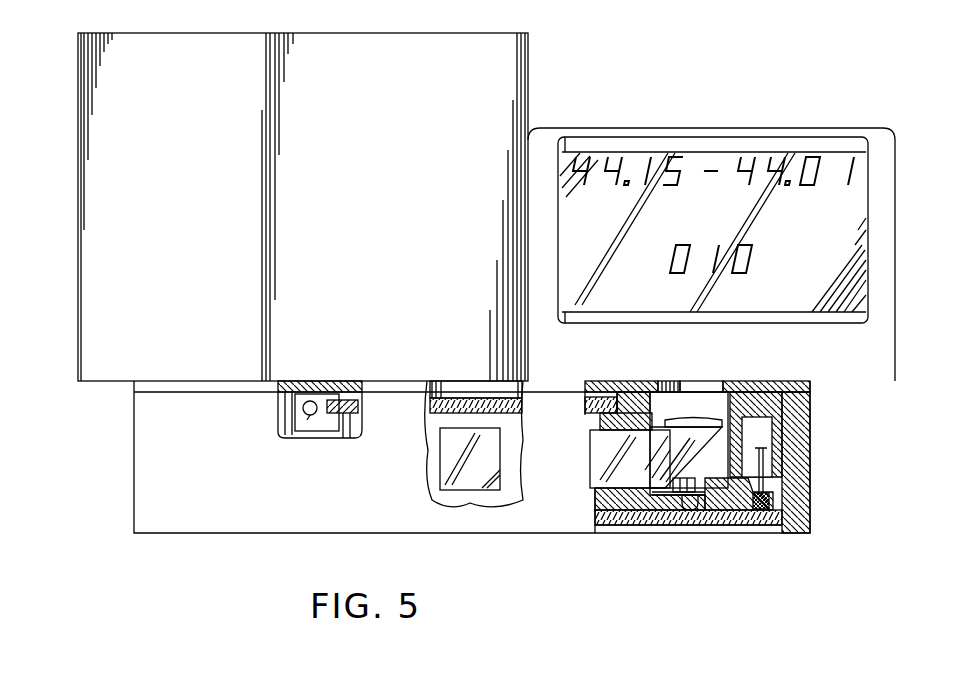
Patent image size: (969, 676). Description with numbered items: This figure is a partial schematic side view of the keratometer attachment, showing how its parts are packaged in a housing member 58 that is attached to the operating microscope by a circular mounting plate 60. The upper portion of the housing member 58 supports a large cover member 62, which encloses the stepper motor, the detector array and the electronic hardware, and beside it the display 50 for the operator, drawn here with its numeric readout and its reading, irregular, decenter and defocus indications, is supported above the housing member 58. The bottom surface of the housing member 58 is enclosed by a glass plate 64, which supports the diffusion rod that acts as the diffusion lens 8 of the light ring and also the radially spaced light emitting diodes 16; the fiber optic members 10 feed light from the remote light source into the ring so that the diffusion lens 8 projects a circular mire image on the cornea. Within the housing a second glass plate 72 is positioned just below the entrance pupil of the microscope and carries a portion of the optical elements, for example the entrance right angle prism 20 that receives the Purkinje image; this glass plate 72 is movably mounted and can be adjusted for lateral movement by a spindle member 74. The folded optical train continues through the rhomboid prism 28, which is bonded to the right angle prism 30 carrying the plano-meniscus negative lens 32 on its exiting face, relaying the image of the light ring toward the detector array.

The cover member 62 is at (97, 178).
The display 50 is at (750, 128).
The circular mounting plate 60 is at (812, 383).
The right angle prism 30 is at (658, 388).
The plano-meniscus negative lens 32 is at (695, 427).
The rhomboid prism 28 is at (605, 480).
The right angle prism 20 is at (490, 458).
The glass plate 72 is at (345, 418).
The spindle member 74 is at (306, 425).
The fiber optic members 10 is at (782, 460).
The glass plate 64 is at (650, 517).
The light emitting diodes 16 is at (695, 505).
The diffusion lens 8 is at (767, 518).
The housing member 58 is at (800, 535).